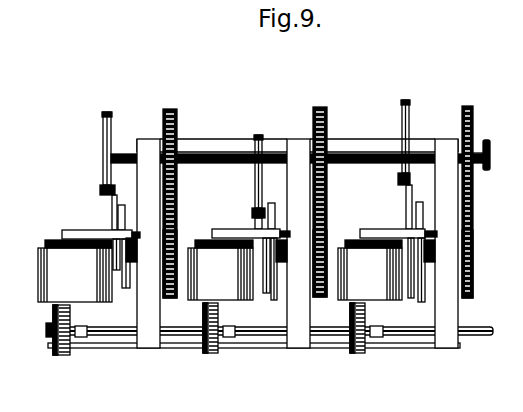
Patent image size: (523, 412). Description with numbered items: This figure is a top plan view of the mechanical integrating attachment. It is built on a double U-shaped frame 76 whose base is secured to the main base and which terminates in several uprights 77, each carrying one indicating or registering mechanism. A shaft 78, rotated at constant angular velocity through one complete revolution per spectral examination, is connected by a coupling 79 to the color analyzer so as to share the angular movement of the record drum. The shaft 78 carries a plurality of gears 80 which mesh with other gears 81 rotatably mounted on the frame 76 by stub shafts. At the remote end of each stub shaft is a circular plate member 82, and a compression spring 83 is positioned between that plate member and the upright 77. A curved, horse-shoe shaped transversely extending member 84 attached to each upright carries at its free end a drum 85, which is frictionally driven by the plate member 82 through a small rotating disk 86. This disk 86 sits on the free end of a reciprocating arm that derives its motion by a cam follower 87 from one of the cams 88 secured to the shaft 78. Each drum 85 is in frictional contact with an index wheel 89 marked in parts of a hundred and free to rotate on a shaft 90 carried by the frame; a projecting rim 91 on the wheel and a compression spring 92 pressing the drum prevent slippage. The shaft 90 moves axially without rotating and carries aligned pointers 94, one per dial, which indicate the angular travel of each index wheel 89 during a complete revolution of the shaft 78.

The double U-shaped frame 76 is at (198, 139).
The uprights 77 is at (150, 139).
The shaft 78 is at (340, 152).
The coupling 79 is at (490, 152).
The gears 80 is at (173, 112).
The gears 81 is at (176, 228).
The circular plate member 82 is at (126, 290).
The compression spring 83 is at (135, 261).
The curved transversely extending member 84 is at (75, 230).
The drum 85 is at (220, 271).
The small rotating disk 86 is at (116, 272).
The cam follower 87 is at (112, 200).
The cams 88 is at (107, 112).
The index wheel 89 is at (64, 355).
The shaft 90 is at (478, 327).
The projecting rim 91 is at (56, 355).
The compression spring 92 is at (62, 240).
The pointers 94 is at (82, 337).